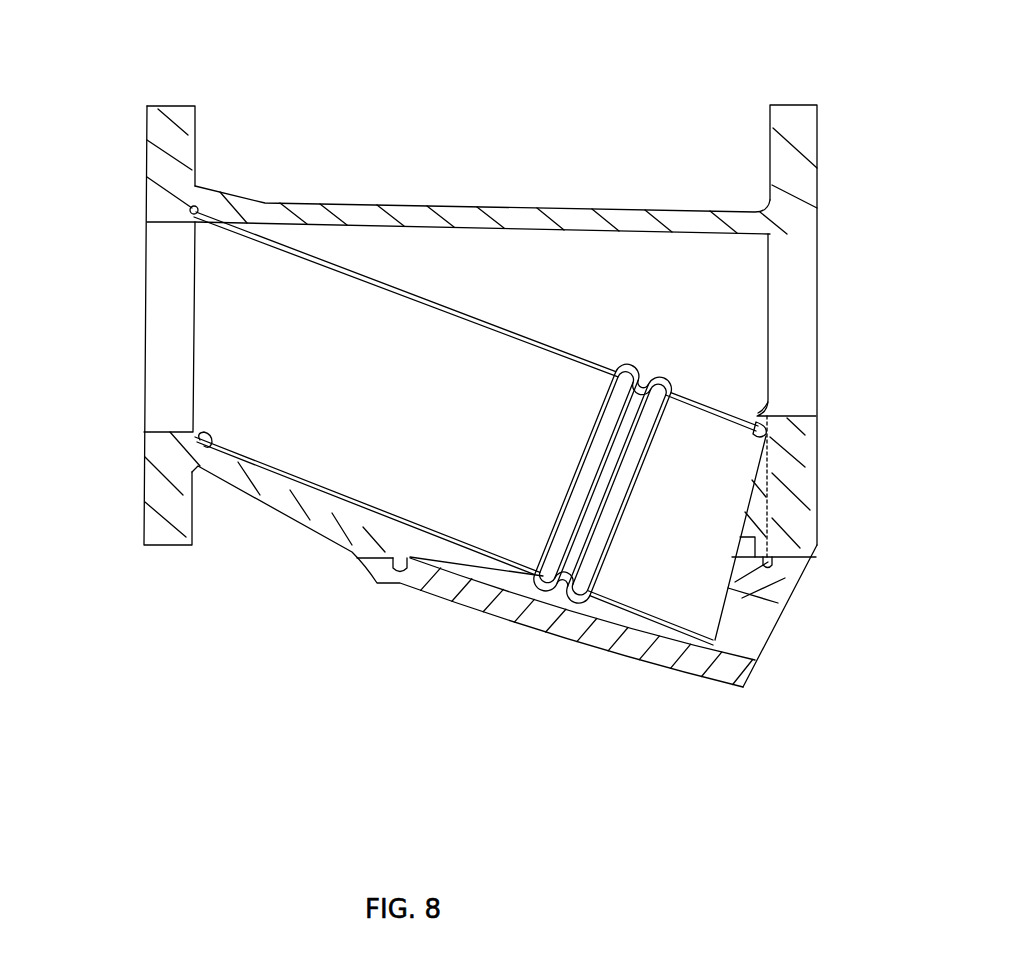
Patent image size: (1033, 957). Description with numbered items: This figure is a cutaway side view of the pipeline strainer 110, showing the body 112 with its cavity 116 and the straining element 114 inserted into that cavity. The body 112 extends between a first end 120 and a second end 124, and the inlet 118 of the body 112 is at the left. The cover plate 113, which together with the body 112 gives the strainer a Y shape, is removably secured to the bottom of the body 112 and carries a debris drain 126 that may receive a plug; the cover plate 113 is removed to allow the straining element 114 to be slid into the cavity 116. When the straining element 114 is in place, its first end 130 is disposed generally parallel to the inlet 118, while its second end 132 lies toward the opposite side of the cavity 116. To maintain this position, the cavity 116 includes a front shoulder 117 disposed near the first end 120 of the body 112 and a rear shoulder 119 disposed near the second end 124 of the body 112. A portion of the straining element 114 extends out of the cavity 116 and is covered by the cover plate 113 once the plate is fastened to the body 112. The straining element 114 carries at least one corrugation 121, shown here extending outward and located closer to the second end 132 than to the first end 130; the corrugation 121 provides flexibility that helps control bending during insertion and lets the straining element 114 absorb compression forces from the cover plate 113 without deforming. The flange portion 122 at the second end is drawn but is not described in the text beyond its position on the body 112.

The pipeline strainer 110 is at (391, 128).
The body 112 is at (530, 207).
The cover plate 113 is at (693, 662).
The straining element 114 is at (408, 484).
The cavity 116 is at (575, 318).
The front shoulder 117 is at (193, 212).
The inlet 118 is at (160, 345).
The rear shoulder 119 is at (758, 413).
The first end of the body 120 is at (155, 105).
The corrugation 121 is at (543, 597).
The right flange 122 is at (800, 335).
The second end of the body 124 is at (818, 105).
The debris drain 126 is at (752, 625).
The first end of the straining element 130 is at (202, 418).
The second end of the straining element 132 is at (753, 462).